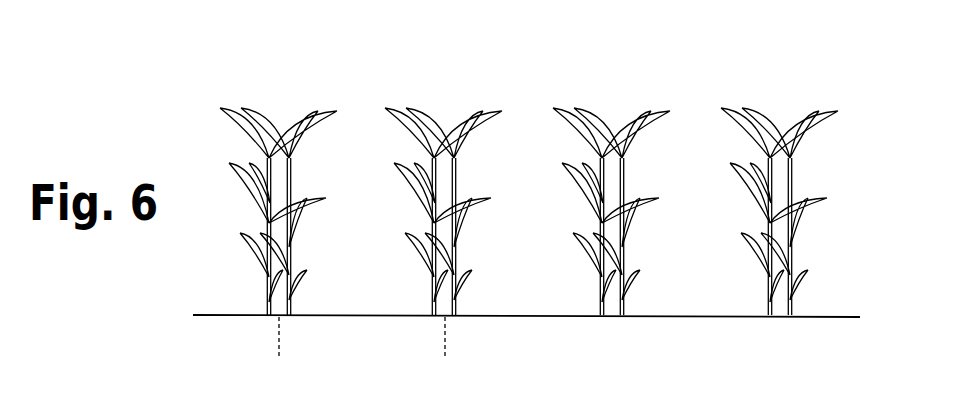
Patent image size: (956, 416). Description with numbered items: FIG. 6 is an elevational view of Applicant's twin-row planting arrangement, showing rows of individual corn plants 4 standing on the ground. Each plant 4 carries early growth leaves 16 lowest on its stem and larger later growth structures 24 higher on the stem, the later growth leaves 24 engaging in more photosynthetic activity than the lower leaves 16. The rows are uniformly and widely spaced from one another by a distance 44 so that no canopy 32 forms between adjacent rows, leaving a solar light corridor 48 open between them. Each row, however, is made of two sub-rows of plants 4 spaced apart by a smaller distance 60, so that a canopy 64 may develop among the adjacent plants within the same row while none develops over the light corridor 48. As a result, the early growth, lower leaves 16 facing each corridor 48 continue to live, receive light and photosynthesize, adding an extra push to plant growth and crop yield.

The canopy 32 is at (360, 174).
The individual plant 4 is at (268, 290).
The solar light corridor 48 is at (349, 244).
The distance 44 is at (302, 350).
The distance 60 is at (555, 300).
The canopy 64 is at (780, 123).
The later growth structures 24 is at (750, 133).
The early growth leaves 16 is at (798, 280).